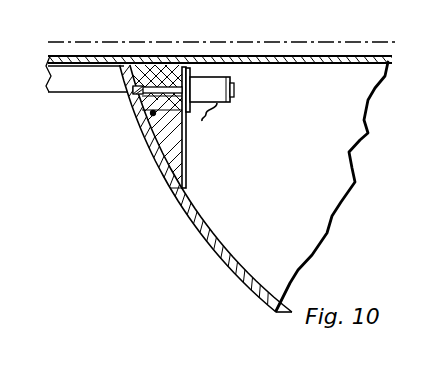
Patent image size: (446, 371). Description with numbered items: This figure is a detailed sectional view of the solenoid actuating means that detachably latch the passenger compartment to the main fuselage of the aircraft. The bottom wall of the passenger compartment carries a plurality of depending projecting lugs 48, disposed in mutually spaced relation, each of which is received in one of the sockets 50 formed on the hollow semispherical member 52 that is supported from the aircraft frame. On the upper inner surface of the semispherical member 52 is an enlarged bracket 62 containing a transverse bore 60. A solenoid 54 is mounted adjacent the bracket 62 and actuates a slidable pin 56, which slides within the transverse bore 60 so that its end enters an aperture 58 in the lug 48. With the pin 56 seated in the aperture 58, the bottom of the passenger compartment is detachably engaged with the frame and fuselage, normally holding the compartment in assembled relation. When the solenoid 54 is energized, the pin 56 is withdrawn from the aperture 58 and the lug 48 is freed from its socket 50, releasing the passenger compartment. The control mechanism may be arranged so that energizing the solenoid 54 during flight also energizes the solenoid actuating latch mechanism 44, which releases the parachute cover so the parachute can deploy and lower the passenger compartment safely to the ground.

The retractible latch means 44 is at (279, 55).
The projecting lugs 48 is at (158, 117).
The sockets 50 is at (153, 114).
The hollow semispherical member 52 is at (201, 229).
The solenoid 54 is at (222, 91).
The slidable pin 56 is at (185, 118).
The aperture 58 is at (150, 97).
The transverse bore 60 is at (135, 88).
The enlarged bracket 62 is at (178, 147).